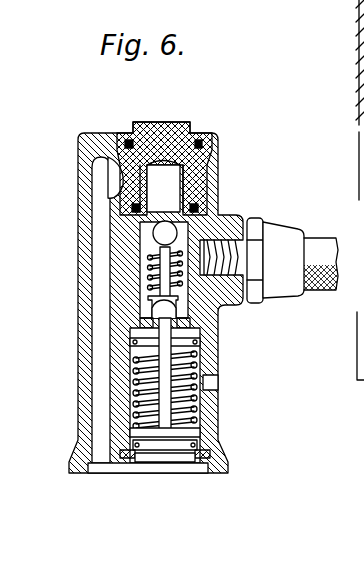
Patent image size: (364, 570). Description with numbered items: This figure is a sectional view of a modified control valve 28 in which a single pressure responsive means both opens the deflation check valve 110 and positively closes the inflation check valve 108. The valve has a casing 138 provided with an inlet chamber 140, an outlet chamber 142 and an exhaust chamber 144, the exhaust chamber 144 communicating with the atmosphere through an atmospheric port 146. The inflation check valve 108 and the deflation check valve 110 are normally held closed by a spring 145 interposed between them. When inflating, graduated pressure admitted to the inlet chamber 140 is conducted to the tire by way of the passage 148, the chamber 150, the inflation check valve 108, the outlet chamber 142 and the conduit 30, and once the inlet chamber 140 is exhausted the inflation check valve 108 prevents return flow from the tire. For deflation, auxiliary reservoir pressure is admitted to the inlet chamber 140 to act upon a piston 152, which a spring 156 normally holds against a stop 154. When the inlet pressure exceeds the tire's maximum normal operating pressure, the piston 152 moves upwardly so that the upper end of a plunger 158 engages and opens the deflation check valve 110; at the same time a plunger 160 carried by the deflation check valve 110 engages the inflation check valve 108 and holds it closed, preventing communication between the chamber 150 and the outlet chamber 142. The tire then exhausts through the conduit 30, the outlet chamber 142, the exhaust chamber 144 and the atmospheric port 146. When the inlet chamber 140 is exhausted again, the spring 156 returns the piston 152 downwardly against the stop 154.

The control valve 28 is at (235, 129).
The conduit 30 is at (327, 240).
The inflation check valve 108 is at (200, 226).
The deflation check valve 110 is at (178, 307).
The casing 138 is at (78, 186).
The inlet chamber 140 is at (146, 476).
The outlet chamber 142 is at (142, 260).
The exhaust chamber 144 is at (184, 385).
The spring 145 is at (156, 282).
The atmospheric port 146 is at (210, 391).
The passage 148 is at (101, 374).
The chamber 150 is at (176, 188).
The piston 152 is at (194, 431).
The stop 154 is at (203, 456).
The spring 156 is at (196, 350).
The plunger 158 is at (140, 346).
The plunger 160 is at (152, 242).